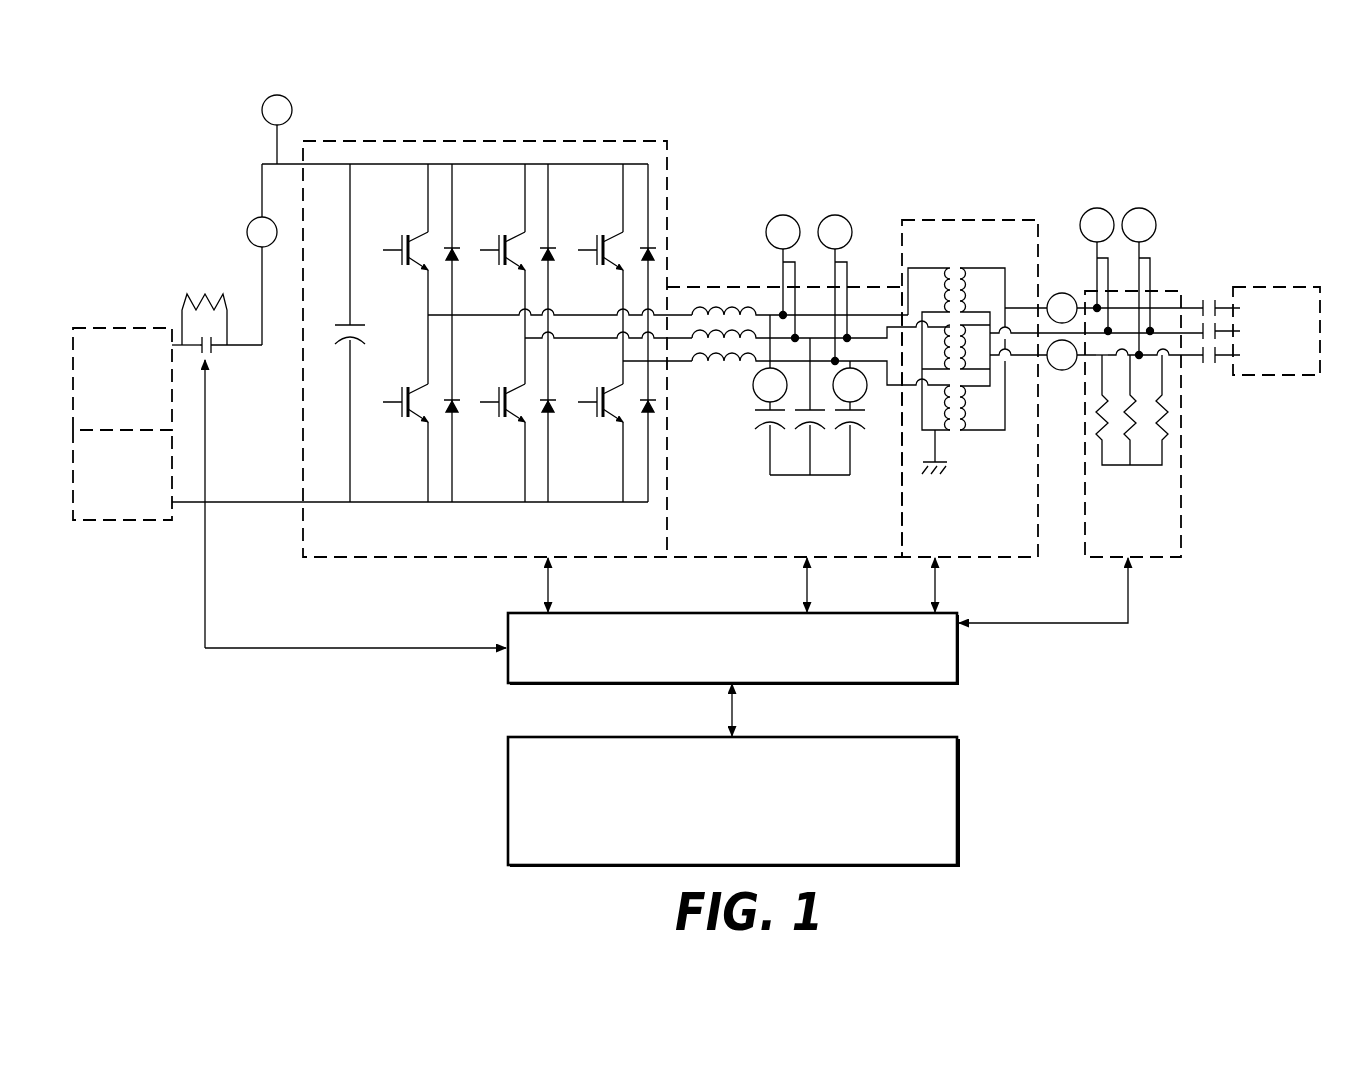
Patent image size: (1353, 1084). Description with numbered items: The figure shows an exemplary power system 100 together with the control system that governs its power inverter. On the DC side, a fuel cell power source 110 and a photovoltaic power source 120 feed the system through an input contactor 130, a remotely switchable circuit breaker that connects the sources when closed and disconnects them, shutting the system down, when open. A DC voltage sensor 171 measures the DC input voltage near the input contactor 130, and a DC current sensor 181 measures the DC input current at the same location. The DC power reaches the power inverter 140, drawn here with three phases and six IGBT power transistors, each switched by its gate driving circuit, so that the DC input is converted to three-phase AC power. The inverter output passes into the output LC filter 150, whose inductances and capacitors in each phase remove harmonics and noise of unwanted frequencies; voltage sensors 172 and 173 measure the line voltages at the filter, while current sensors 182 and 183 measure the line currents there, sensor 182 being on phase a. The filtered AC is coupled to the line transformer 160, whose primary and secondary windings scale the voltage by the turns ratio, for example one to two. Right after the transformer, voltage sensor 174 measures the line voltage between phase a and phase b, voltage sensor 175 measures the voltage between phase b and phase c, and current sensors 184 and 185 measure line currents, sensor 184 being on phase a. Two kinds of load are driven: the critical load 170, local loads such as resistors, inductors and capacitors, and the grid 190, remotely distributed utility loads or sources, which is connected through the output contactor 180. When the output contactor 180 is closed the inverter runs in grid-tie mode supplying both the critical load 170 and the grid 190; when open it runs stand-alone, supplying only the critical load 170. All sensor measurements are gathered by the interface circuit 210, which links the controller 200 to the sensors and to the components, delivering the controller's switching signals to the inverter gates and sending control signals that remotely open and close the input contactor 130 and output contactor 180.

The power system 100 is at (1162, 682).
The fuel cell power source 110 is at (137, 417).
The photovoltaic power source 120 is at (137, 511).
The input contactor 130 is at (228, 360).
The power inverter 140 is at (652, 535).
The output LC filter 150 is at (892, 535).
The line transformer 160 is at (1033, 484).
The critical load 170 is at (1147, 546).
The voltage sensor 171 is at (262, 104).
The voltage sensor 172 is at (768, 218).
The voltage sensor 173 is at (851, 225).
The voltage sensor 174 is at (1085, 210).
The voltage sensor 175 is at (1133, 210).
The output contactor 180 is at (1234, 208).
The current sensor 181 is at (268, 217).
The current sensor 182 is at (753, 392).
The current sensor 183 is at (866, 371).
The current sensor 184 is at (1074, 294).
The current sensor 185 is at (1072, 371).
The grid 190 is at (1293, 369).
The controller 200 is at (958, 790).
The interface circuit 210 is at (958, 640).